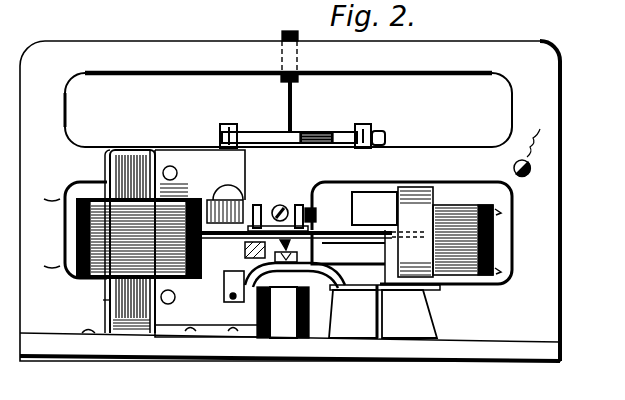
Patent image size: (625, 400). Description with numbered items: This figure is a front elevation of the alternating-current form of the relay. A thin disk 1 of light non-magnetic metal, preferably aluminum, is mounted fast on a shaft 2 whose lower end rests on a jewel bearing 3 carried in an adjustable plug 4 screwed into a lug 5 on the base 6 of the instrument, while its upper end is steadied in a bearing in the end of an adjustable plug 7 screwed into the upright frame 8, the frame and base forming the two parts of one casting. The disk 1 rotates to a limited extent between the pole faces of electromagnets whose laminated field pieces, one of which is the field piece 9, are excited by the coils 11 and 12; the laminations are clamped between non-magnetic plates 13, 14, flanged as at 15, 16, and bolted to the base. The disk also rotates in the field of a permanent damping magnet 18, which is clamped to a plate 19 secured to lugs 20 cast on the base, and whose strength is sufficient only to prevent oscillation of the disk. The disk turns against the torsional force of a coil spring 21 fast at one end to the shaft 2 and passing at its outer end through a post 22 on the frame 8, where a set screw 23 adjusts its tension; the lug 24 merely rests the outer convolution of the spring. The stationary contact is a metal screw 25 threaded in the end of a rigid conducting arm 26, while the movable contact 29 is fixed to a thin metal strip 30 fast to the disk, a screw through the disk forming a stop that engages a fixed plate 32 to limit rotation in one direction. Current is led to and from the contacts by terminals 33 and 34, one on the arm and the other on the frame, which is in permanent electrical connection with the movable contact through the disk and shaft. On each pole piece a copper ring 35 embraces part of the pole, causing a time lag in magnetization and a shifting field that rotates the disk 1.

The disk 1 is at (327, 230).
The shaft 2 is at (292, 123).
The jewel bearing 3 is at (318, 288).
The adjustable plug 4 is at (237, 304).
The lug 5 is at (288, 327).
The base 6 is at (471, 351).
The adjustable plug 7 is at (282, 33).
The upright frame 8 is at (551, 195).
The laminated field piece 9 is at (137, 152).
The coil 11 is at (66, 238).
The coil 12 is at (498, 243).
The non-magnetic plate 13 is at (104, 301).
The non-magnetic plate 14 is at (206, 243).
The flange 15 is at (82, 333).
The flange 16 is at (168, 339).
The permanent damping magnet 18 is at (430, 213).
The plate 19 is at (408, 290).
The lug 20 is at (384, 312).
The coil spring 21 is at (258, 128).
The post 22 is at (363, 127).
The set screw 23 is at (387, 140).
The lug 24 is at (221, 130).
The metal screw 25 is at (308, 200).
The rigid arm 26 is at (300, 204).
The movable contact 29 is at (259, 204).
The thin strip 30 is at (243, 200).
The fixed plate 32 is at (233, 278).
The terminal 33 is at (291, 196).
The terminal 34 is at (531, 162).
The copper ring 35 is at (205, 198).